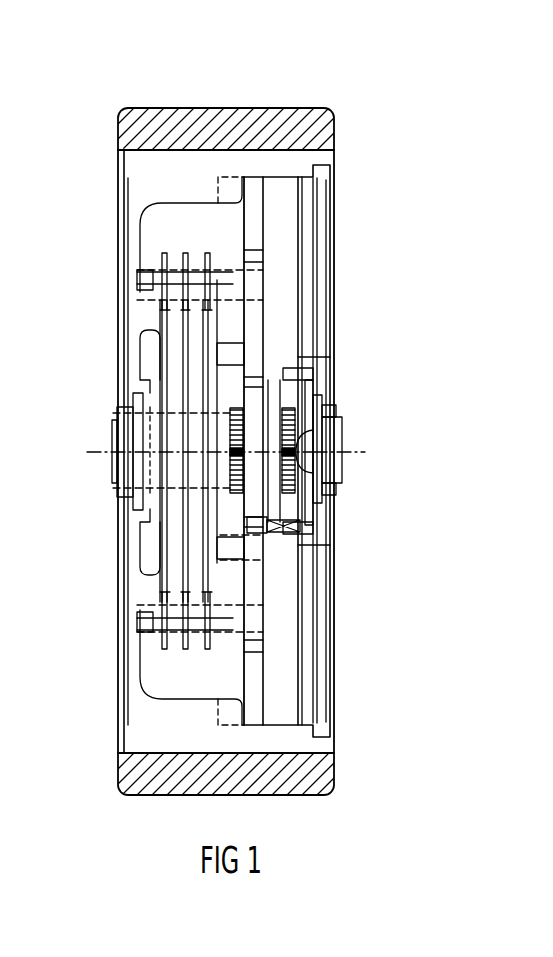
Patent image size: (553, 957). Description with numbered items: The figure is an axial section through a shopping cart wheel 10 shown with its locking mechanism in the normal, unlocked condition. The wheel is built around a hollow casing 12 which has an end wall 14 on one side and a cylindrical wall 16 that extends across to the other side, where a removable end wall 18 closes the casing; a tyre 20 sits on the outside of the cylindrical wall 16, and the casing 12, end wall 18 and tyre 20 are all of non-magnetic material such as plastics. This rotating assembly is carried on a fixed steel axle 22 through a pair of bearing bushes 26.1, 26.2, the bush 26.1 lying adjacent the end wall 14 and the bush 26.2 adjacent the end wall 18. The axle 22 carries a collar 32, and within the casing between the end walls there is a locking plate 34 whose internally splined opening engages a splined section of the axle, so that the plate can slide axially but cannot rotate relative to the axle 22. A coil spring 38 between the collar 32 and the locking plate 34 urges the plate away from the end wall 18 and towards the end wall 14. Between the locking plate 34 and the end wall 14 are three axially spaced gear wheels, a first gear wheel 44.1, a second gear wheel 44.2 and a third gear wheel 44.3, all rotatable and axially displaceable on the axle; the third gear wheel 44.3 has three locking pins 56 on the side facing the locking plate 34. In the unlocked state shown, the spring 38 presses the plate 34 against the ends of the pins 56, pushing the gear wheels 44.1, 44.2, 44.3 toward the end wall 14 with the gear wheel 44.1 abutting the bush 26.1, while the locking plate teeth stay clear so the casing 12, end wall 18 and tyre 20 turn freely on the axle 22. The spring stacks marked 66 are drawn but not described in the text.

The shopping cart wheel 10 is at (386, 122).
The hollow casing 12 is at (114, 190).
The end wall 14 is at (125, 238).
The cylindrical wall 16 is at (289, 162).
The removable end wall 18 is at (322, 260).
The tyre 20 is at (243, 128).
The fixed axle 22 is at (350, 425).
The bearing bush 26.1 is at (117, 420).
The bearing bush 26.2 is at (320, 488).
The collar 32 is at (307, 510).
The locking plate 34 is at (258, 232).
The coil spring 38 is at (283, 365).
The first gear wheel 44.1 is at (167, 533).
The second gear wheel 44.2 is at (185, 547).
The third gear wheel 44.3 is at (210, 562).
The locking pins 56 is at (230, 352).
The spring stack 66 is at (230, 274).